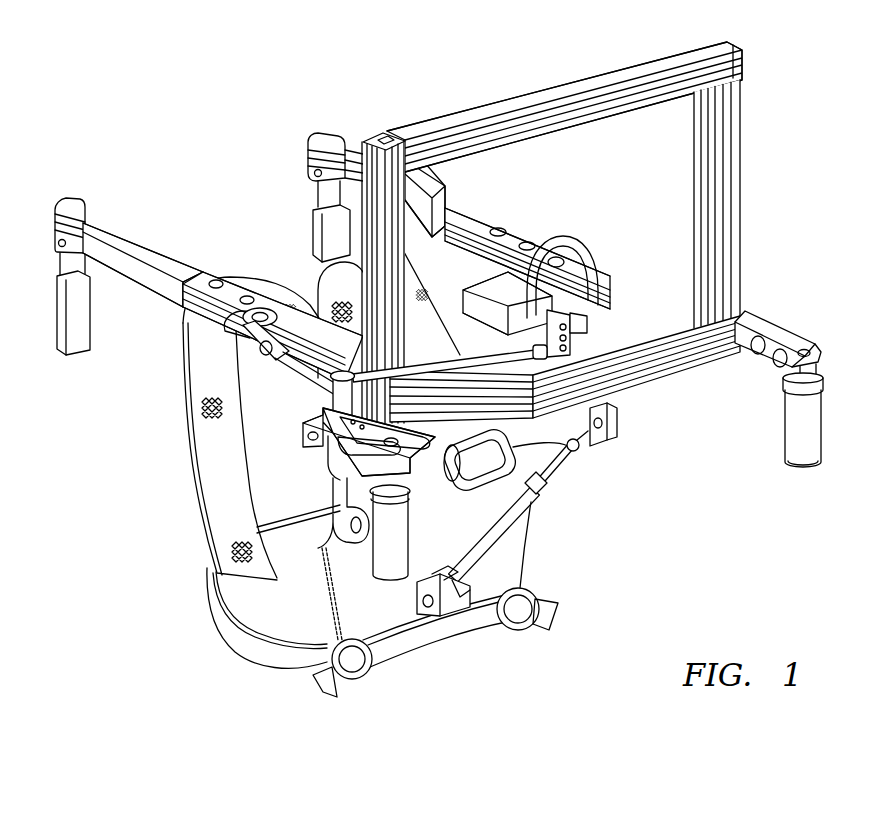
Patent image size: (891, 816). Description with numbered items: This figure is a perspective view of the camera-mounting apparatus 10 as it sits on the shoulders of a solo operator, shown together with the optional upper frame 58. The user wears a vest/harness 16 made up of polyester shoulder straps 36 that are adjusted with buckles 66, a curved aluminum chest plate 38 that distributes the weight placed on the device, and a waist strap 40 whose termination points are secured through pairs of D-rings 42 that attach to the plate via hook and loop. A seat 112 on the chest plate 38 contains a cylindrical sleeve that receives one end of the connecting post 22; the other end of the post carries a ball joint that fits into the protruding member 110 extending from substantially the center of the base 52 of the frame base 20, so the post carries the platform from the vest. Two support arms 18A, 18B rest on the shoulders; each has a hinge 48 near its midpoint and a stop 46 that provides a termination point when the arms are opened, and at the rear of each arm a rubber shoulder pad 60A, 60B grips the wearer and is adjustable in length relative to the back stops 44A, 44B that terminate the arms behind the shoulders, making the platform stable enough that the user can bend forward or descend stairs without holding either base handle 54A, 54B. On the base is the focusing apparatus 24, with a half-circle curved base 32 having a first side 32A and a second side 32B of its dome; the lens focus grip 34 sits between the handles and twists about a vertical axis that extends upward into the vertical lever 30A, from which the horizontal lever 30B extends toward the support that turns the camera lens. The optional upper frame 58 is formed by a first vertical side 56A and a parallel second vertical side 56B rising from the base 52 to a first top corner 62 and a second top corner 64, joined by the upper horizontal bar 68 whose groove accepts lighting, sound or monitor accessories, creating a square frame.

The apparatus 10 is at (442, 364).
The vest/harness 16 is at (215, 428).
The first support arm for shoulders 18A is at (64, 199).
The second support arm for shoulders 18B is at (322, 128).
The frame base 20 is at (636, 358).
The connecting post 22 is at (430, 563).
The focusing apparatus 24 is at (291, 454).
The vertical lever on focusing apparatus 30A is at (322, 406).
The horizontal lever on focusing apparatus 30B is at (433, 362).
The curved base (half circle)/disc 32 is at (503, 527).
The first side of dome on half circle 32A is at (333, 470).
The second side of dome on half circle 32B is at (490, 412).
The lens focus grip 34 is at (422, 551).
The shoulder straps on vest/harness 36 is at (200, 418).
The chest plate on vest/harness 38 is at (475, 633).
The waist strap on vest/harness 40 is at (230, 647).
The D-rings on waist strap 42 is at (533, 632).
The first back stop on first support arm for shoulders 44A is at (70, 297).
The second back stop on second support arm for shoulders 44B is at (335, 223).
The stop on shoulder arms 46 is at (237, 328).
The hinges on shoulder arms 48 is at (263, 350).
The base of frame 52 is at (712, 350).
The first base handle 54A is at (405, 528).
The second base handle 54B is at (815, 412).
The first vertical side for optional upper frame 56A is at (365, 243).
The second vertical side for optional upper frame 56B is at (737, 210).
The upper frame 58 is at (610, 232).
The first shoulder pad 60A is at (183, 246).
The second shoulder pad 60B is at (432, 170).
The first top corner of optional upper frame 62 is at (370, 133).
The second top corner of optional upper frame 64 is at (742, 63).
The buckles on shoulder straps 66 is at (560, 450).
The upper horizontal bar for optional accessories 68 is at (596, 107).
The protruding member on base to attach to connecting post 110 is at (614, 421).
The seat for connecting post on vest/harness 112 is at (418, 605).